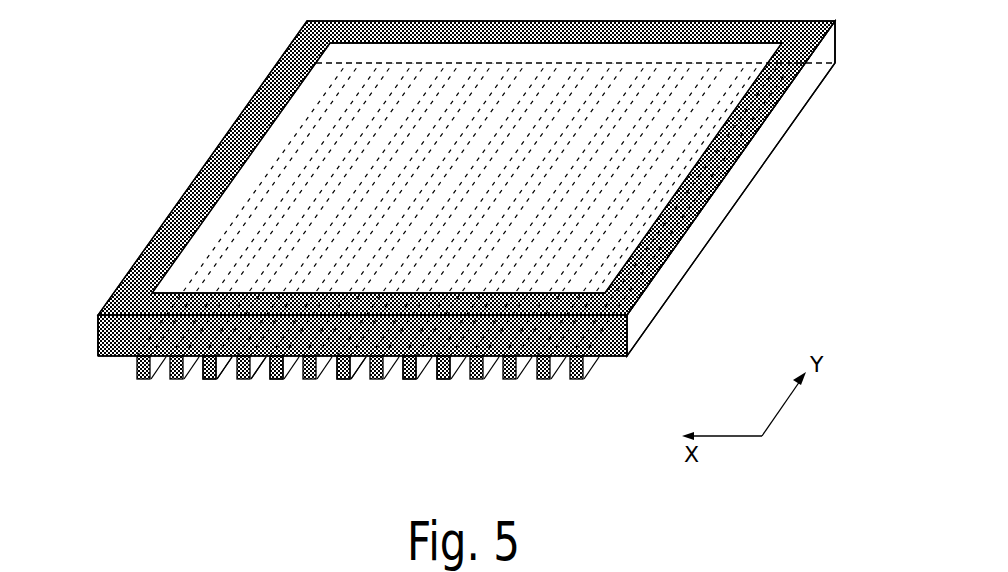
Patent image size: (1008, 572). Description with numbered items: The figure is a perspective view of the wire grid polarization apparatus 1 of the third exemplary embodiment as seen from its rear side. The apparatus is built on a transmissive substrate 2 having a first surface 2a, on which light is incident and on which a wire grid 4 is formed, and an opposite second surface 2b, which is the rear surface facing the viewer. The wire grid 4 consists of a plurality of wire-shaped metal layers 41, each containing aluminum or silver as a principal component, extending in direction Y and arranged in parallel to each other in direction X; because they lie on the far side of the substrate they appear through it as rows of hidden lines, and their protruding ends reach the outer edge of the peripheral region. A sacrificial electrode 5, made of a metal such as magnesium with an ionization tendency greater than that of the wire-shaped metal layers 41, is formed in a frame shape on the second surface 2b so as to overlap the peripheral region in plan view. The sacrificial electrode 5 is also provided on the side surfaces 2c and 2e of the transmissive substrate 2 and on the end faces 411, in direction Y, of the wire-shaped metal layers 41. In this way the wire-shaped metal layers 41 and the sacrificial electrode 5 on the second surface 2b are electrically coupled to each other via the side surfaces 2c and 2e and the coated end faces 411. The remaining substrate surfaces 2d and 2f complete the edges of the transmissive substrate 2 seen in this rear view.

The wire grid polarization apparatus 1 is at (210, 65).
The transmissive substrate 2 is at (618, 357).
The first surface 2a is at (130, 357).
The second surface 2b is at (190, 273).
The side surface 2c is at (100, 356).
The left side surface of base 2d is at (98, 332).
The side surface 2e is at (837, 45).
The right side surface of base 2f is at (768, 137).
The wire grid 4 is at (368, 422).
The wire-shaped metal layer 41 is at (437, 378).
The end face 411 is at (362, 375).
The sacrificial electrode 5 is at (270, 372).